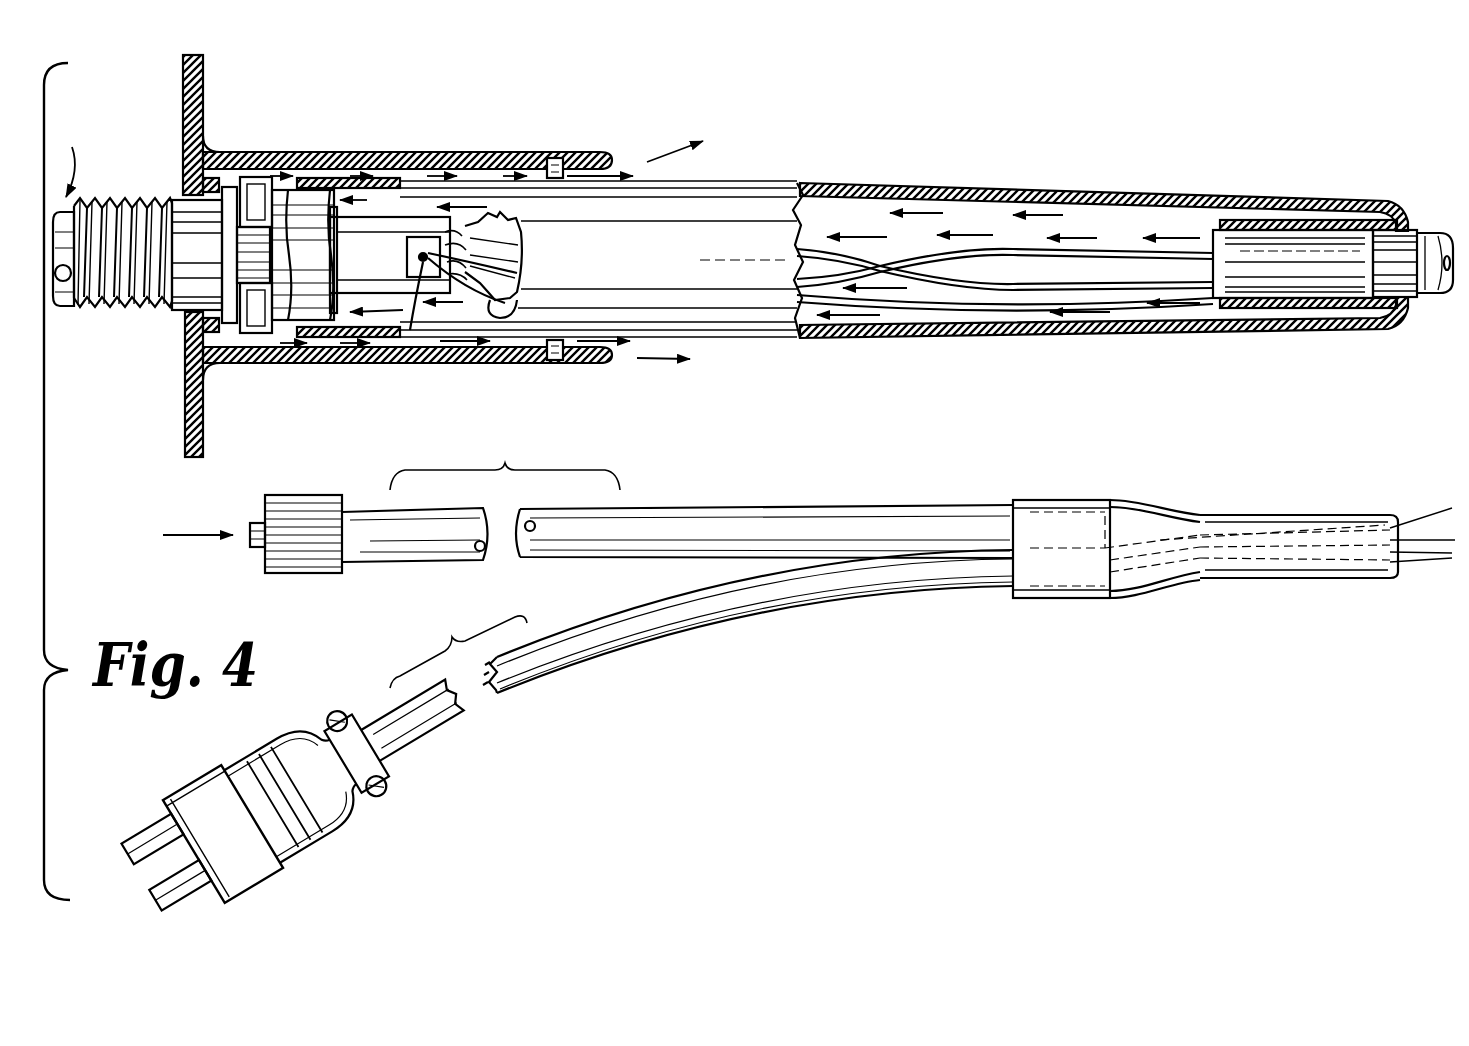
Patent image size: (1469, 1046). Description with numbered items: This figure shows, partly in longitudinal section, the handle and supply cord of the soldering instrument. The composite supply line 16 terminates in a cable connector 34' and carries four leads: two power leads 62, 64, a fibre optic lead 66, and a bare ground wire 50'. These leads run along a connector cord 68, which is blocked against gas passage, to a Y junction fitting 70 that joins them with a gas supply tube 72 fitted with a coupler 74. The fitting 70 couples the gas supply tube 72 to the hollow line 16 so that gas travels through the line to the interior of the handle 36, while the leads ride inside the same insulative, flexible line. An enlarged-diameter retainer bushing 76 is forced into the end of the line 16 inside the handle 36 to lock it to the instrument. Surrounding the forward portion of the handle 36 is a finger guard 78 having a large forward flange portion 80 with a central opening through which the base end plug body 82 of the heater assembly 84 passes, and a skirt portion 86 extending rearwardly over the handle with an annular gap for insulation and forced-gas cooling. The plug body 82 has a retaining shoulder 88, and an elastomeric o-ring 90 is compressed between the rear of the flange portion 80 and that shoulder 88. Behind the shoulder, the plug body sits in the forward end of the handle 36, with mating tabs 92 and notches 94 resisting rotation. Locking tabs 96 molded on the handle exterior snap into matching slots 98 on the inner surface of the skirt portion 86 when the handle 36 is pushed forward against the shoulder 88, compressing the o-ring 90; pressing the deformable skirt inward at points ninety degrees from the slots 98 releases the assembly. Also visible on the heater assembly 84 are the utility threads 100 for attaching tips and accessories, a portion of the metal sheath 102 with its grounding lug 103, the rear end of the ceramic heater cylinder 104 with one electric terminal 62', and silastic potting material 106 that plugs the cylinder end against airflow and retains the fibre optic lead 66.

The composite supply line 16 is at (1418, 230).
The cable connector 34' is at (300, 787).
The handle 36 is at (890, 186).
The bare ground wire 50' is at (632, 413).
The power lead 62 is at (805, 457).
The electric terminal 62' is at (417, 334).
The power lead 64 is at (516, 241).
The fibre optic lead 66 is at (521, 274).
The connector cord 68 is at (690, 628).
The Y junction fitting 70 is at (1153, 598).
The gas supply tube 72 is at (673, 509).
The coupler 74 is at (325, 495).
The retainer bushing 76 is at (1210, 222).
The finger guard 78 is at (215, 156).
The flange portion 80 is at (204, 68).
The plug body 82 is at (160, 203).
The heater assembly 84 is at (76, 158).
The skirt portion 86 is at (332, 178).
The retaining shoulder 88 is at (186, 355).
The o-ring 90 is at (262, 190).
The tabs 92 is at (307, 173).
The notches 94 is at (238, 264).
The locking tabs 96 is at (570, 165).
The slots 98 is at (550, 158).
The utility threads 100 is at (120, 306).
The metal sheath 102 is at (64, 292).
The grounding lug 103 is at (418, 278).
The ceramic heater cylinder 104 is at (384, 244).
The silastic potting material 106 is at (500, 219).